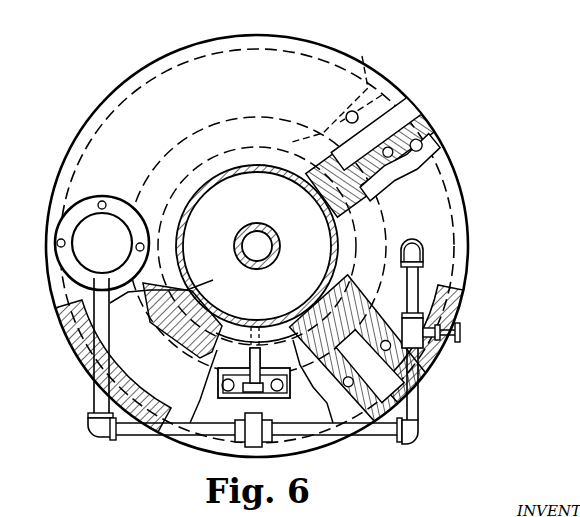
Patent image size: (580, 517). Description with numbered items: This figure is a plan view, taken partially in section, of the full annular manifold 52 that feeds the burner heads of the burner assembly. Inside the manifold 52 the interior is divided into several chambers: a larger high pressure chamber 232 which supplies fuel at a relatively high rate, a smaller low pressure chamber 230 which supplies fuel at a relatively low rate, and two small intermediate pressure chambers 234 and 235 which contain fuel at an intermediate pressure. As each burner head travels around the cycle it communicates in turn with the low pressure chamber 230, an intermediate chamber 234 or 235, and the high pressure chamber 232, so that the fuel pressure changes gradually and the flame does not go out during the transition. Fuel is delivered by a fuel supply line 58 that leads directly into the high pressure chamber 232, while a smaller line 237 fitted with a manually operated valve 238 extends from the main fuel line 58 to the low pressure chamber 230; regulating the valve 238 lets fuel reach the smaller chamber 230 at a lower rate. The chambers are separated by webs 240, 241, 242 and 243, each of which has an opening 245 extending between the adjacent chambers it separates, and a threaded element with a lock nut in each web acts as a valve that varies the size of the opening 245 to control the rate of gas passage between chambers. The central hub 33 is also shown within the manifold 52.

The annular manifold 52 is at (333, 40).
The central hub ring 33 is at (186, 233).
The fuel supply line 58 is at (78, 233).
The low pressure chamber 230 is at (447, 300).
The high pressure chamber 232 is at (85, 322).
The intermediate pressure chamber 234 is at (375, 350).
The intermediate pressure chamber 235 is at (376, 133).
The smaller line 237 is at (123, 430).
The manually operated valve 238 is at (438, 350).
The web 240 is at (362, 58).
The web 241 is at (416, 145).
The web 242 is at (385, 377).
The web 243 is at (345, 422).
The opening 245 is at (400, 168).